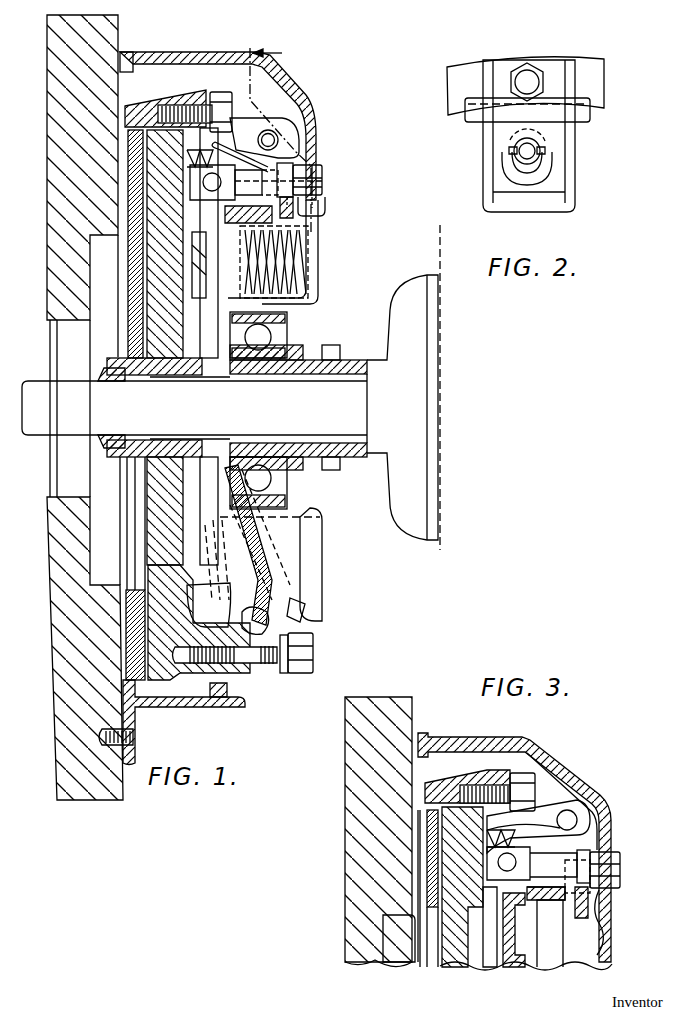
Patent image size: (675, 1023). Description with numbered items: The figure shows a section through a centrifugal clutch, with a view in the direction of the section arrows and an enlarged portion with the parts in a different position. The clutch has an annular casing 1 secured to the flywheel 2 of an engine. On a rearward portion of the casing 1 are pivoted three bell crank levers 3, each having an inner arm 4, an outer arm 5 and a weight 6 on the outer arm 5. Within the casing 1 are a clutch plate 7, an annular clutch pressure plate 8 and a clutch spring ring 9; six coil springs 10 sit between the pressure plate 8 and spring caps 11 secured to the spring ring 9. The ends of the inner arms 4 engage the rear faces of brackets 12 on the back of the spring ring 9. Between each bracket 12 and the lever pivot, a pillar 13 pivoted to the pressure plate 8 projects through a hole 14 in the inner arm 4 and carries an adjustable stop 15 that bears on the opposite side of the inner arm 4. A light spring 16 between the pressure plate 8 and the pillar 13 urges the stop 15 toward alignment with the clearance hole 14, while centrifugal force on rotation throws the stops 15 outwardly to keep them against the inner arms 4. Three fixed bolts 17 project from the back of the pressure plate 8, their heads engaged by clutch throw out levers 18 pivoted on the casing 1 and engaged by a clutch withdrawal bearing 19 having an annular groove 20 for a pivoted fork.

In FIG. 1, the annular casing 1 is at (222, 62).
In FIG. 3, the annular casing 1 is at (531, 750).
In FIG. 1, the flywheel 2 is at (88, 732).
In FIG. 1, the bell crank lever 3 is at (290, 122).
In FIG. 2, the bell crank lever 3 is at (576, 160).
In FIG. 3, the bell crank lever 3 is at (578, 812).
In FIG. 1, the inner arm 4 is at (311, 206).
In FIG. 2, the inner arm 4 is at (540, 203).
In FIG. 3, the inner arm 4 is at (584, 912).
In FIG. 1, the outer arm 5 is at (248, 115).
In FIG. 2, the outer arm 5 is at (502, 84).
In FIG. 1, the weight 6 is at (153, 103).
In FIG. 2, the weight 6 is at (473, 80).
In FIG. 1, the clutch plate 7 is at (140, 188).
In FIG. 1, the clutch pressure plate 8 is at (168, 207).
In FIG. 1, the clutch spring ring 9 is at (214, 321).
In FIG. 1, the coil spring 10 is at (200, 254).
In FIG. 1, the spring cap 11 is at (310, 557).
In FIG. 1, the bracket 12 is at (312, 245).
In FIG. 3, the bracket 12 is at (548, 895).
In FIG. 1, the pillar 13 is at (243, 180).
In FIG. 2, the pillar 13 is at (527, 160).
In FIG. 3, the pillar 13 is at (548, 860).
In FIG. 1, the hole 14 is at (305, 226).
In FIG. 2, the hole 14 is at (535, 177).
In FIG. 3, the hole 14 is at (588, 893).
In FIG. 1, the adjustable stop 15 is at (325, 180).
In FIG. 2, the adjustable stop 15 is at (511, 148).
In FIG. 3, the adjustable stop 15 is at (588, 857).
In FIG. 1, the light spring 16 is at (187, 160).
In FIG. 3, the light spring 16 is at (483, 837).
In FIG. 1, the fixed bolt 17 is at (248, 652).
In FIG. 1, the clutch throw out lever 18 is at (298, 624).
In FIG. 1, the clutch withdrawal bearing 19 is at (277, 476).
In FIG. 1, the annular groove 20 is at (326, 357).